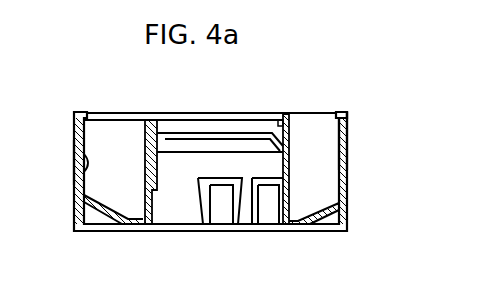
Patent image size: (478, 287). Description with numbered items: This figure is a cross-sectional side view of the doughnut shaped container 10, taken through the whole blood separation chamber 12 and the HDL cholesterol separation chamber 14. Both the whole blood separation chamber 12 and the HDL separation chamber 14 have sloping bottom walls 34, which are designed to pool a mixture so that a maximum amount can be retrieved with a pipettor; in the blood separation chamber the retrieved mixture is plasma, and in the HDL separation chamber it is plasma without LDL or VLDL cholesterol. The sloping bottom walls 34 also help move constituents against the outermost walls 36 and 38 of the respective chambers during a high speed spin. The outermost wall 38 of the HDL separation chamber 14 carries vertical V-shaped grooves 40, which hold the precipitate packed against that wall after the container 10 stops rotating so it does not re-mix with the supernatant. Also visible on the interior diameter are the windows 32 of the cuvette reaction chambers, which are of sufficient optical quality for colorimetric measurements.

The doughnut shaped container 10 is at (348, 163).
The whole blood separation chamber 12 is at (108, 123).
The HDL cholesterol separation chamber 14 is at (312, 138).
The windows 32 is at (267, 212).
The sloping bottom walls 34 is at (106, 218).
The outermost wall 36 is at (85, 158).
The outermost wall 38 is at (348, 138).
The V-shaped grooves 40 is at (333, 130).